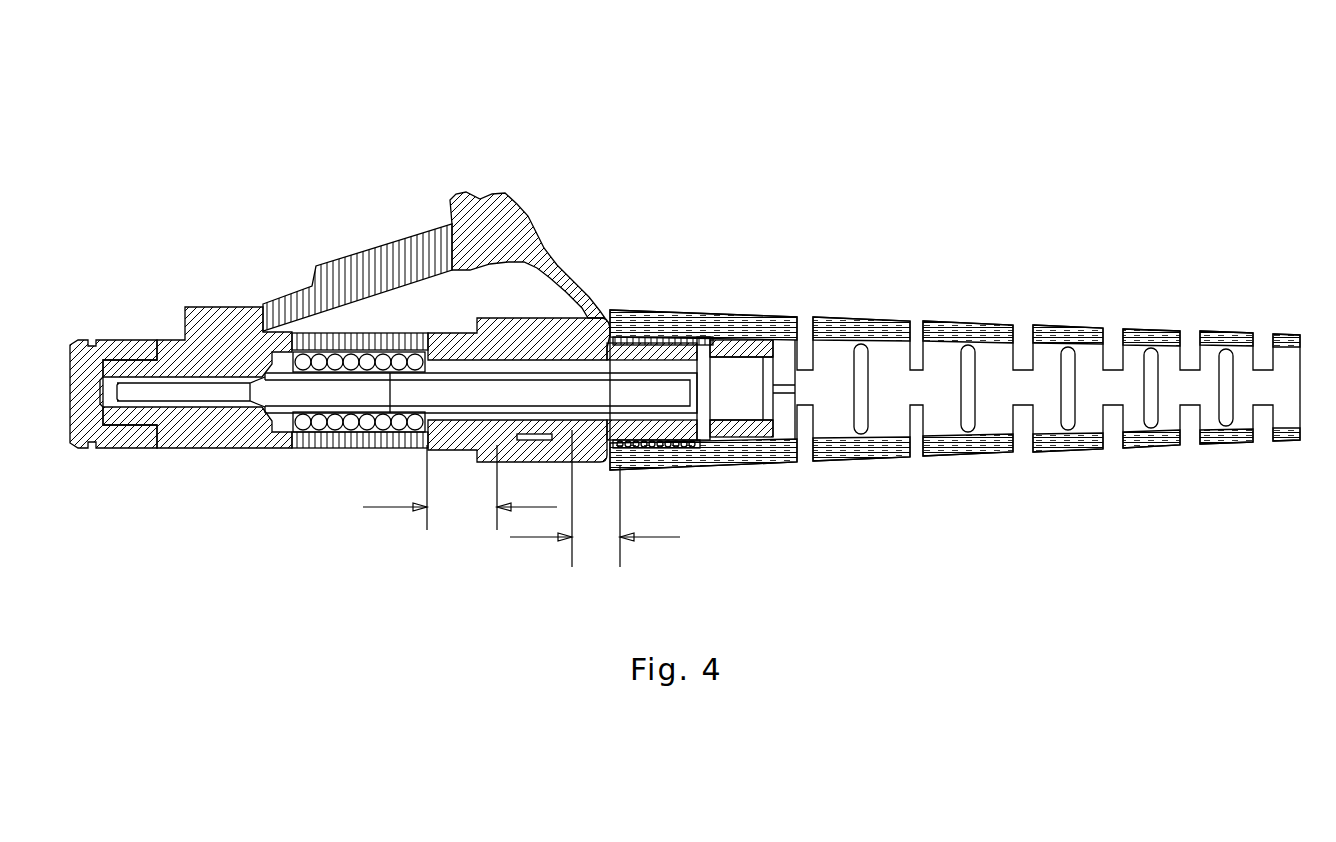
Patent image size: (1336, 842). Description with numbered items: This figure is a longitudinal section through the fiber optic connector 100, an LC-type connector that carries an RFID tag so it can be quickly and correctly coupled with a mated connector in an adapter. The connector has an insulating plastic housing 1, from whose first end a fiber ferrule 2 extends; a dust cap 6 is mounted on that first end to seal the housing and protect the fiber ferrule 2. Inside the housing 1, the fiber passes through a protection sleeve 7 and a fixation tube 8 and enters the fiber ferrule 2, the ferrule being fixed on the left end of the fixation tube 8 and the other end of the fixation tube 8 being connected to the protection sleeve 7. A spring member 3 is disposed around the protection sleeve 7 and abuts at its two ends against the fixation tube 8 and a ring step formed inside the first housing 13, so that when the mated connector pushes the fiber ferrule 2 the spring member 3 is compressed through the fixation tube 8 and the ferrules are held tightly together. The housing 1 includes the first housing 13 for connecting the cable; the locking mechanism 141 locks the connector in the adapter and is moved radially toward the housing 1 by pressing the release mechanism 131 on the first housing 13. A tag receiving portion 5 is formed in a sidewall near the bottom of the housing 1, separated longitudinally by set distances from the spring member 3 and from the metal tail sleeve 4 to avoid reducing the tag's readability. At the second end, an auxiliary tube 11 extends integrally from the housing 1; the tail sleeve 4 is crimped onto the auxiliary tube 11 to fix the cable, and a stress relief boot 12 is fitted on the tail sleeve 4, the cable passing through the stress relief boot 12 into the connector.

The fiber optic connector 100 is at (707, 143).
The housing 1 is at (243, 440).
The fiber ferrule 2 is at (175, 383).
The spring member 3 is at (300, 367).
The tail sleeve 4 is at (733, 347).
The tag receiving portion 5 is at (565, 425).
The dust cap 6 is at (100, 348).
The protection sleeve 7 is at (545, 390).
The fixation tube 8 is at (298, 388).
The auxiliary tube 11 is at (678, 440).
The stress relief boot 12 is at (933, 357).
The first housing 13 is at (538, 323).
The release mechanism 131 is at (515, 233).
The locking mechanism 141 is at (378, 247).